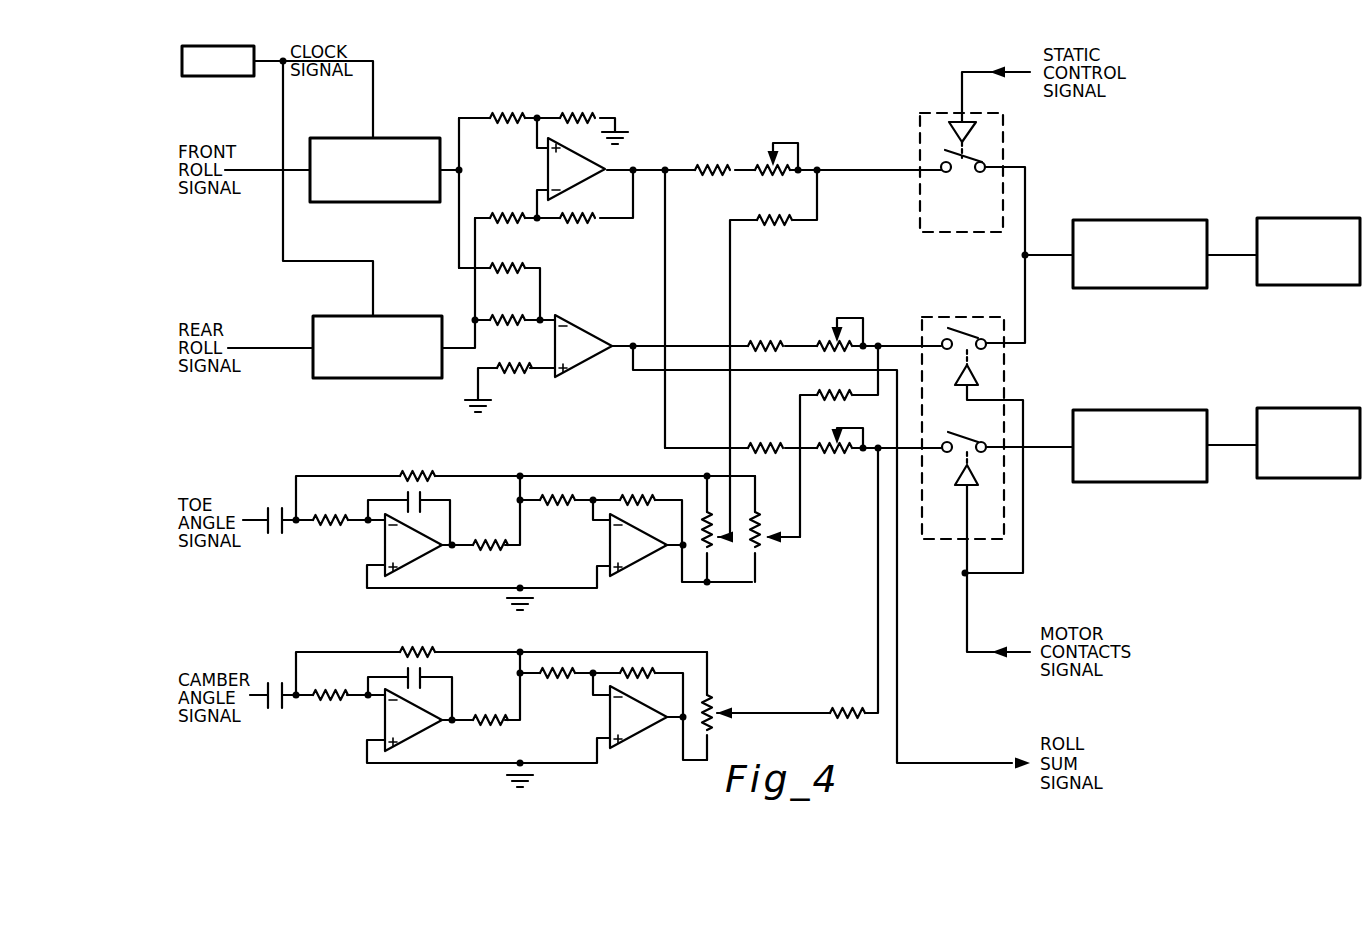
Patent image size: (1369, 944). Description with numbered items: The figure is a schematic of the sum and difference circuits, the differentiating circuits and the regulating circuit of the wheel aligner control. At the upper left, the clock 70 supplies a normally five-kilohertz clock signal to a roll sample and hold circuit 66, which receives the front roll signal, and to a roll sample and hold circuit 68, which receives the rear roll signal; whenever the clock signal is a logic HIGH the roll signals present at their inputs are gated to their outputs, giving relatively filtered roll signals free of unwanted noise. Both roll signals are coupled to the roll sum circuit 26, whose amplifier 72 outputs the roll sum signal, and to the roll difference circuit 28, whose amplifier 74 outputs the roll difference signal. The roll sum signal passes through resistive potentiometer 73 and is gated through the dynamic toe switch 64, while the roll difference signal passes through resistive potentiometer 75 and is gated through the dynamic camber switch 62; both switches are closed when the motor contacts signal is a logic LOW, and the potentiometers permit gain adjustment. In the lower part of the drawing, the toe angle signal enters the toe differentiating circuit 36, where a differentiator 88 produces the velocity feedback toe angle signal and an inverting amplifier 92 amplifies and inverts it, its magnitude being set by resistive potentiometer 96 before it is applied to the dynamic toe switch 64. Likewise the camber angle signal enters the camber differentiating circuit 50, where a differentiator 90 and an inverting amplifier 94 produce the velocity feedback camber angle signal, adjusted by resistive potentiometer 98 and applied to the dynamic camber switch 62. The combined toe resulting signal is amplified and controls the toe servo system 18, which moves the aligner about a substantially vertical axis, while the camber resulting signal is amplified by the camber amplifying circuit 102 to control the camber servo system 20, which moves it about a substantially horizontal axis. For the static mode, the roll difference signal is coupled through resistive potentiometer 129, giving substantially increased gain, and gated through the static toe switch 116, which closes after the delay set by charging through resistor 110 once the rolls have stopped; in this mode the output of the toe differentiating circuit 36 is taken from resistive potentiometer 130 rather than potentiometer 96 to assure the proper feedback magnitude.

The clock 70 is at (212, 77).
The roll sample and hold circuit 66 is at (428, 98).
The roll sample and hold circuit 68 is at (336, 316).
The roll difference circuit 28 is at (560, 110).
The amplifier 74 is at (548, 166).
The roll sum circuit 26 is at (545, 341).
The amplifier 72 is at (590, 362).
The resistive potentiometer 129 is at (772, 141).
The static toe switch 116 is at (992, 149).
The resistor 110 is at (1158, 220).
The toe servo system 18 is at (1310, 218).
The resistive potentiometer 73 is at (834, 332).
The resistive potentiometer 75 is at (836, 452).
The dynamic toe switch 64 is at (990, 356).
The dynamic camber switch 62 is at (992, 495).
The camber amplifying circuit 102 is at (1140, 482).
The camber servo system 20 is at (1270, 484).
The toe differentiating circuit 36 is at (521, 522).
The camber differentiating circuit 50 is at (516, 705).
The differentiator 88 is at (366, 544).
The inverting amplifier 92 is at (645, 562).
The differentiator 90 is at (358, 725).
The inverting amplifier 94 is at (644, 734).
The resistive potentiometer 130 is at (722, 562).
The resistive potentiometer 96 is at (753, 555).
The resistive potentiometer 98 is at (776, 672).